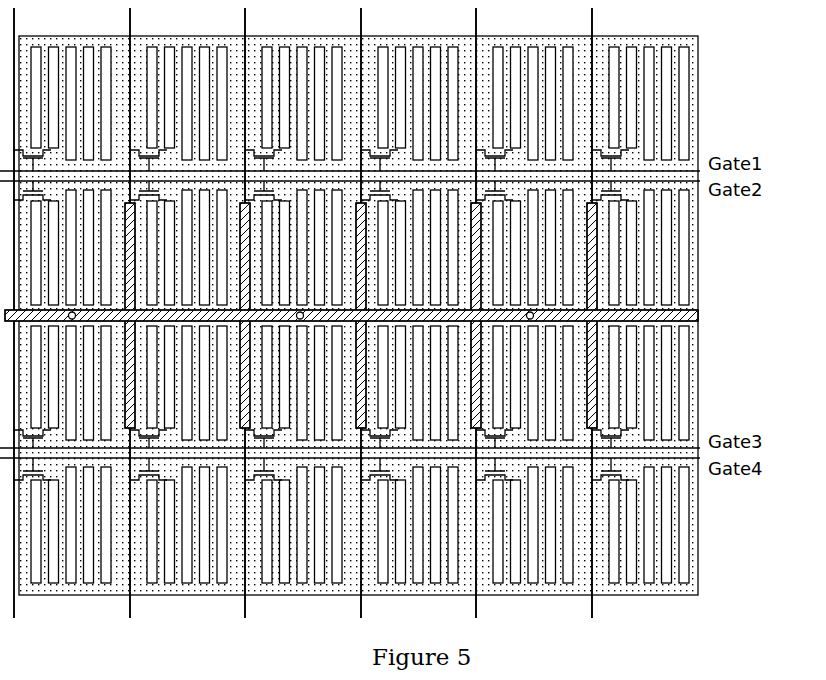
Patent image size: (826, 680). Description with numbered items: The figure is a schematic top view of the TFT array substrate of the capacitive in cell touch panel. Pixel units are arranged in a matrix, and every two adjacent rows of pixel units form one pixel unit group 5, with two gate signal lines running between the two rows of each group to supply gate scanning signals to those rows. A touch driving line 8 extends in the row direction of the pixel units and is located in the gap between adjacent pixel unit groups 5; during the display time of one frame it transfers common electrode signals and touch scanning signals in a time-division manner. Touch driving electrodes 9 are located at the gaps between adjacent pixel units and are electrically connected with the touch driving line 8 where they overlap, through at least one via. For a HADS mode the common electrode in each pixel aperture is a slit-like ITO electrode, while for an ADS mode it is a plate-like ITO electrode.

The pixel unit group 5 is at (768, 164).
The touch driving line 8 is at (698, 316).
The touch driving electrode 9 is at (698, 325).